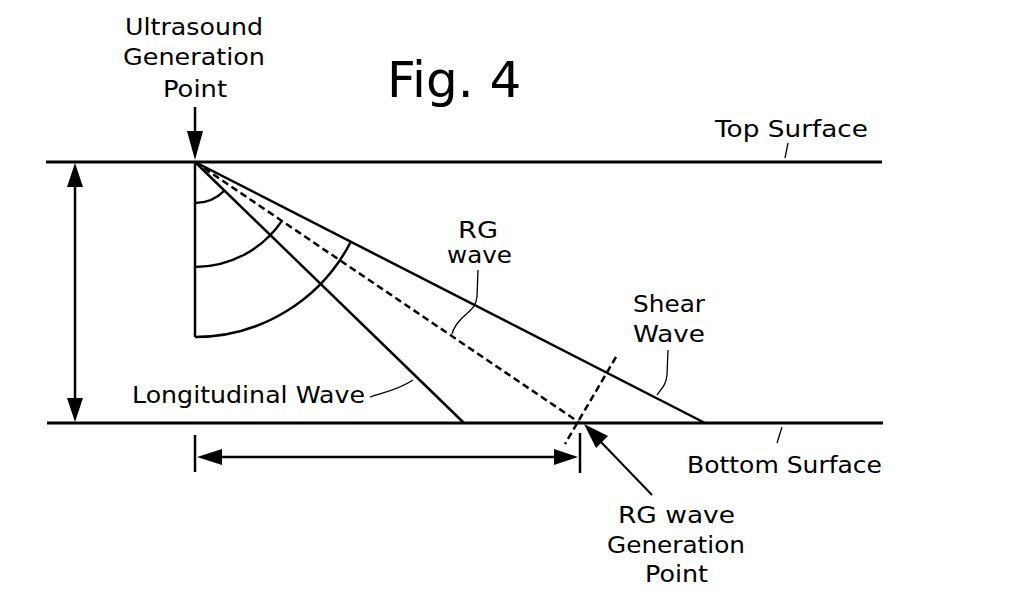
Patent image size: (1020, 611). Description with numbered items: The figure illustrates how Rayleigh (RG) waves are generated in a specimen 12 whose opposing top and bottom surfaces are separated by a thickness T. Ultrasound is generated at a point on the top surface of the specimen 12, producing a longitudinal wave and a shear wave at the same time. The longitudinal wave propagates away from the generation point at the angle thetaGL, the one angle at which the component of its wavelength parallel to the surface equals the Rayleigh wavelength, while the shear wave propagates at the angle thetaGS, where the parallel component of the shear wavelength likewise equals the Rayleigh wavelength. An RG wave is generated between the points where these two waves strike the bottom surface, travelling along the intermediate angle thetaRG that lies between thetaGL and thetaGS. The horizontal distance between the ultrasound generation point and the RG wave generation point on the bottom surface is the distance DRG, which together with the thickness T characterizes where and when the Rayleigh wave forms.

The specimen 12 is at (119, 425).
The thickness of specimen T is at (67, 292).
The horizontal distance between ultrasound generation point and RG wave generation p DRG is at (387, 467).
The longitudinal wave propagation angle thetaGL is at (213, 201).
The RG wave angle thetaRG is at (232, 262).
The shear wave propagation angle thetaGS is at (242, 333).